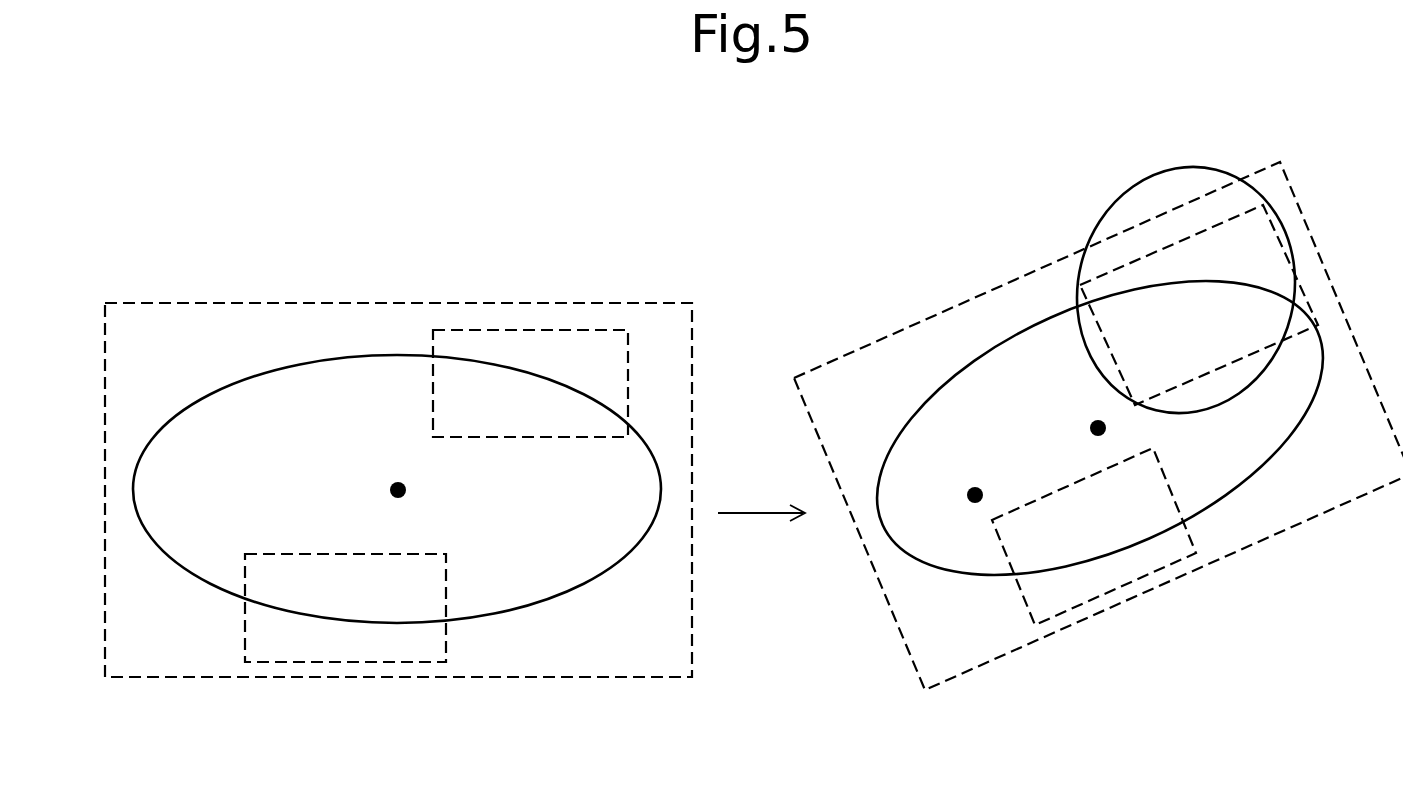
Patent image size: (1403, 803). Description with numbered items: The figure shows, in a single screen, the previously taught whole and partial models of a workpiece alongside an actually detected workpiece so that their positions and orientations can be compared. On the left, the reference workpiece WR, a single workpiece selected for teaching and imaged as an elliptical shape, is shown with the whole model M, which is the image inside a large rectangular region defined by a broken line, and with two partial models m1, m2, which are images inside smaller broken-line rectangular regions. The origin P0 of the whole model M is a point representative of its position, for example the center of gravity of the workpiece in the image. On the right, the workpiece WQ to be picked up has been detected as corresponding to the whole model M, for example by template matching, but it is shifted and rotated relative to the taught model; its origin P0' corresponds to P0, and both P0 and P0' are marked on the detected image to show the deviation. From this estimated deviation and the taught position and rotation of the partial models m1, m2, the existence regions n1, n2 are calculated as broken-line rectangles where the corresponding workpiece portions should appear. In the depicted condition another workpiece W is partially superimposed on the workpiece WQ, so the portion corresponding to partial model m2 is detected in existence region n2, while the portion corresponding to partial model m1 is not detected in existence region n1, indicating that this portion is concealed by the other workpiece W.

The whole model M is at (322, 392).
The first partial model m1 is at (502, 400).
The second partial model m2 is at (412, 598).
The origin of the whole model P0 is at (663, 495).
The reference workpiece WR is at (645, 440).
The workpiece W is at (1152, 170).
The workpiece to be picked up WQ is at (1037, 322).
The first existence region n1 is at (1218, 285).
The second existence region n2 is at (1077, 575).
The origin of the workpiece to be picked P0' is at (1073, 431).